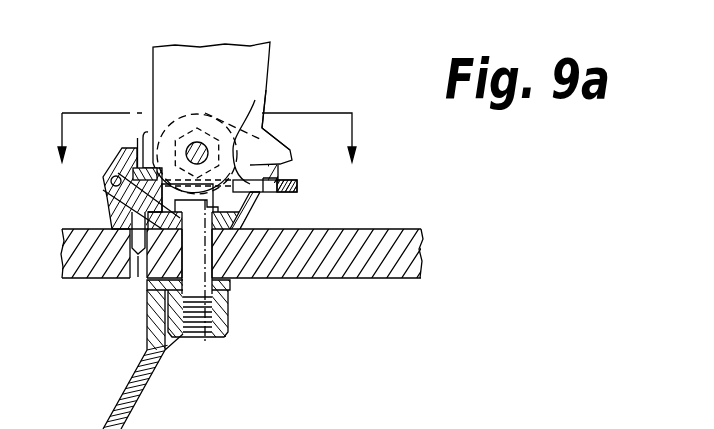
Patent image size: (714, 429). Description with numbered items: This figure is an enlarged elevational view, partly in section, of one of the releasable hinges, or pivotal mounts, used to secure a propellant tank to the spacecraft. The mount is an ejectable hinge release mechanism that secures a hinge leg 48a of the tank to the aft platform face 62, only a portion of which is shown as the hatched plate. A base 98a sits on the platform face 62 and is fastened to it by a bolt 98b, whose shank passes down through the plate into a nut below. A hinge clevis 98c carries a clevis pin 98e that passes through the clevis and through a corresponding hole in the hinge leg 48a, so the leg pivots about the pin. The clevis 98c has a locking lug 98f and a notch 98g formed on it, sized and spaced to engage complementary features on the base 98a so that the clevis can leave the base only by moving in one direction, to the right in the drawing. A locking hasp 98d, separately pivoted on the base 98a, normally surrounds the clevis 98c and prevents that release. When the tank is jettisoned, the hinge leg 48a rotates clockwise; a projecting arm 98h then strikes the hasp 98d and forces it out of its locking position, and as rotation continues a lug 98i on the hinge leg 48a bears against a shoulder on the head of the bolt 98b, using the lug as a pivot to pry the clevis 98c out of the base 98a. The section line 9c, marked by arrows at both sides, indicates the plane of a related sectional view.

The aft platform face 62 is at (352, 268).
The hinge leg 48a is at (272, 58).
The base 98a is at (108, 204).
The bolt 98b is at (238, 276).
The hinge clevis 98c is at (281, 166).
The locking hasp 98d is at (298, 188).
The clevis pin 98e is at (199, 147).
The locking lug 98f is at (177, 241).
The notch 98g is at (248, 194).
The projecting arm 98h is at (288, 146).
The lug 98i is at (264, 118).
The section line 9c is at (213, 154).